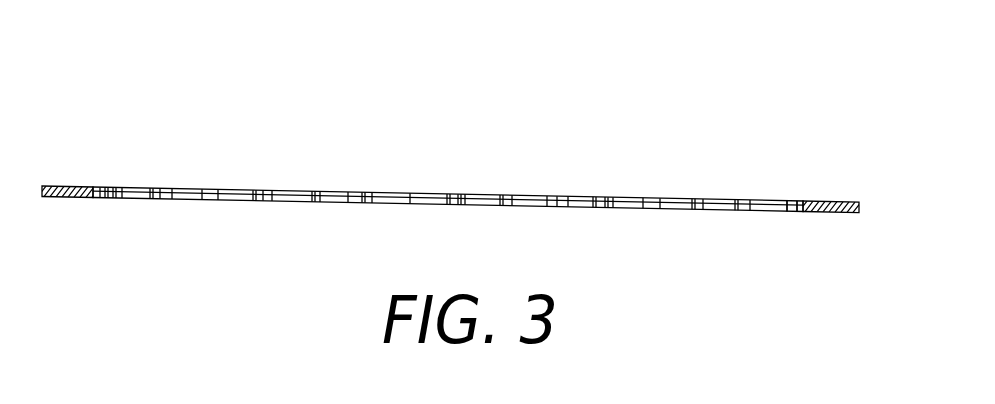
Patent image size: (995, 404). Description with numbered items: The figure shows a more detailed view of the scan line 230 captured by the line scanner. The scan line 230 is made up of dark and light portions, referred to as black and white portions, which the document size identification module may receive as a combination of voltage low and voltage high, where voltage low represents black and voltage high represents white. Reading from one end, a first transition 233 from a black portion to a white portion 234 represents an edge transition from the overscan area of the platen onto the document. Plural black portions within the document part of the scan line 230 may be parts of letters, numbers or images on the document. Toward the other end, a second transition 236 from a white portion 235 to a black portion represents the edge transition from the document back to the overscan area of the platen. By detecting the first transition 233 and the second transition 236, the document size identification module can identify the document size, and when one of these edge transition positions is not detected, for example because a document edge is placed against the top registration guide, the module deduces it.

The scan line 230 is at (602, 135).
The first transition 233 is at (100, 198).
The white portion 234 is at (107, 198).
The white portion 235 is at (787, 215).
The second transition 236 is at (795, 215).